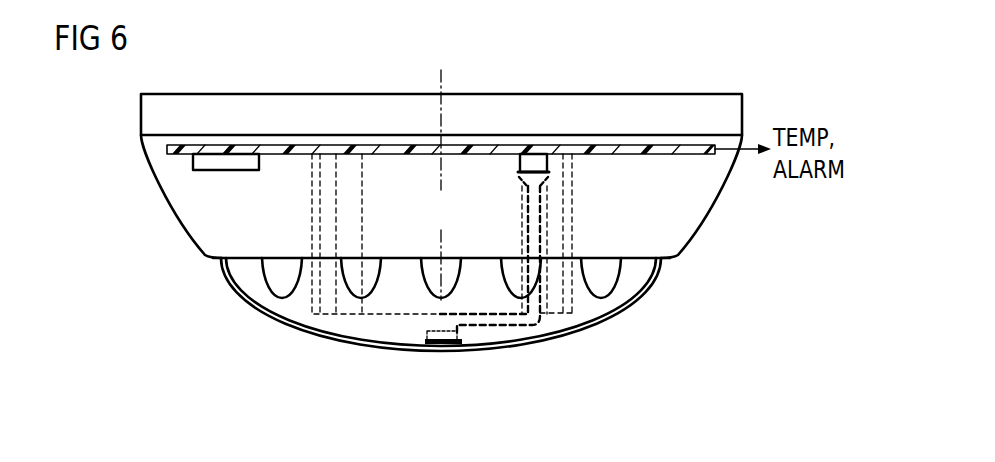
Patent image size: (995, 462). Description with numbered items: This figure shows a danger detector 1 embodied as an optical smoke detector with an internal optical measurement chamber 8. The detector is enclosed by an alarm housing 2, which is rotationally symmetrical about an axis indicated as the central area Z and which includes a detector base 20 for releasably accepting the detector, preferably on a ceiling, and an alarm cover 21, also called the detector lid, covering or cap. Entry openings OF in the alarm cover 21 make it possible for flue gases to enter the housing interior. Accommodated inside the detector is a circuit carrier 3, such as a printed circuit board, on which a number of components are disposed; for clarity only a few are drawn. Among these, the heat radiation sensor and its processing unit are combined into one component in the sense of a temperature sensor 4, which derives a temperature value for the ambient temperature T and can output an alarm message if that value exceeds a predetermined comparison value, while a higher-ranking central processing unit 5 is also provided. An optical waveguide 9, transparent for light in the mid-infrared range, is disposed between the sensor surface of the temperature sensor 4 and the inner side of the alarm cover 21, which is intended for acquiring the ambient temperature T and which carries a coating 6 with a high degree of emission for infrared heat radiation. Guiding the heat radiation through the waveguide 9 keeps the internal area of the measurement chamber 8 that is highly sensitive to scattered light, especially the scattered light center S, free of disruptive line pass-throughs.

The danger detector 1 is at (777, 90).
The alarm housing 2 is at (668, 262).
The detector base 20 is at (712, 207).
The alarm cover 21 is at (632, 316).
The circuit carrier 3 is at (175, 156).
The temperature sensor 4 is at (548, 165).
The central processing unit 5 is at (196, 166).
The coating 6 is at (448, 345).
The measurement chamber 8 is at (312, 324).
The optical waveguide 9 is at (540, 200).
The entry openings OF is at (284, 291).
The ambient temperature T is at (428, 338).
The central area Z is at (445, 93).
The scattered light center S is at (450, 226).